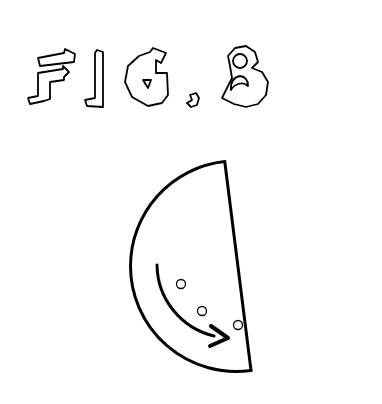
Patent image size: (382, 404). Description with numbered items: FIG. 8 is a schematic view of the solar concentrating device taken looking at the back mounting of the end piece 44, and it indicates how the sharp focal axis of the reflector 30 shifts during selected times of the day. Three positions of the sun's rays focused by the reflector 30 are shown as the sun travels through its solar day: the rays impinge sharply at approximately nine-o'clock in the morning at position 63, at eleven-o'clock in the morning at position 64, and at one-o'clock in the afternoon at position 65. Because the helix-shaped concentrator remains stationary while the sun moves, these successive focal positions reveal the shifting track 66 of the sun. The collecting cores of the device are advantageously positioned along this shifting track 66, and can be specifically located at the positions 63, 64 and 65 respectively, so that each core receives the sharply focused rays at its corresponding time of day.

The reflector 30 is at (131, 252).
The end piece 44 is at (195, 205).
The nine-o'clock a.m. focal position 63 is at (185, 283).
The eleven-o'clock a.m. focal position 64 is at (206, 310).
The one-o'clock p.m. focal position 65 is at (241, 327).
The shifting track 66 is at (177, 310).